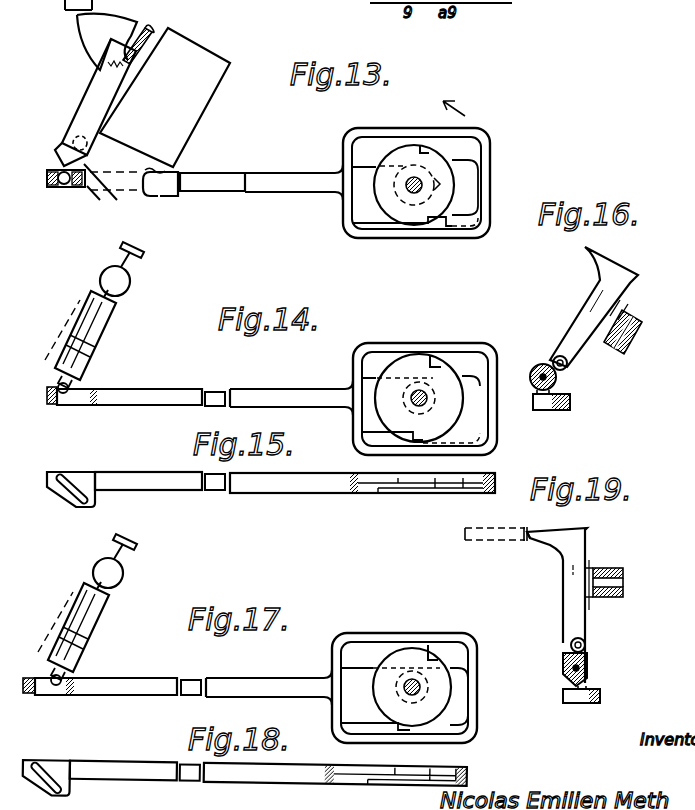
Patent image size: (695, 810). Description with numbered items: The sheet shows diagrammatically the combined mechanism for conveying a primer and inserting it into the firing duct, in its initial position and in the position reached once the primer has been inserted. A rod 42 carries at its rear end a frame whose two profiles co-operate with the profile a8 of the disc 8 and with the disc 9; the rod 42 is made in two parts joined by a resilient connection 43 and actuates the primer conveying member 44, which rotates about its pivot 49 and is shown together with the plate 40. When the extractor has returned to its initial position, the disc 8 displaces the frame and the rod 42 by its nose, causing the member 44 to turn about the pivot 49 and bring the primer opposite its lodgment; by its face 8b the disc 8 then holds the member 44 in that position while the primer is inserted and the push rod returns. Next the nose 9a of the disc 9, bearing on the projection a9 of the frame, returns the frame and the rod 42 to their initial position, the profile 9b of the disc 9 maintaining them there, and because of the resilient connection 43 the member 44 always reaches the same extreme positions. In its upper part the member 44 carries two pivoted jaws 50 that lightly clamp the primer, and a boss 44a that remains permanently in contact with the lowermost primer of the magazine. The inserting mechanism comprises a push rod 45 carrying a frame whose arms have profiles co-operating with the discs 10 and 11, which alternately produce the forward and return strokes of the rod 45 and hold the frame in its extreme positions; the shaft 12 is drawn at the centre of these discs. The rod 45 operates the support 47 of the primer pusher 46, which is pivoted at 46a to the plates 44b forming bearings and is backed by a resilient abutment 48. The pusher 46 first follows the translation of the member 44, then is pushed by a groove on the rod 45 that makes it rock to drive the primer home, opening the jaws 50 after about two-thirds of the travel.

In FIG. 13, the disc 8 is at (404, 188).
In FIG. 13, the face of disc 8 8b is at (445, 183).
In FIG. 13, the disc 9 is at (398, 212).
In FIG. 13, the nose of disc 9 9a is at (414, 227).
In FIG. 13, the profile of disc 9 9b is at (370, 194).
In FIG. 13, the profile of disc 8 a8 is at (393, 153).
In FIG. 13, the projection of the frame a9 is at (423, 226).
In FIG. 14, the disc 10 is at (432, 395).
In FIG. 17, the disc 10 is at (403, 687).
In FIG. 14, the disc 11 is at (442, 422).
In FIG. 17, the disc 11 is at (386, 708).
In FIG. 13, the shaft 12 is at (414, 180).
In FIG. 14, the shaft 12 is at (408, 403).
In FIG. 17, the shaft 12 is at (425, 683).
In FIG. 13, the plate 40 is at (212, 82).
In FIG. 13, the rod 42 is at (303, 180).
In FIG. 13, the resilient connection 43 is at (222, 180).
In FIG. 13, the primer conveying member 44 is at (84, 112).
In FIG. 13, the boss 44a is at (97, 38).
In FIG. 16, the plates 44b is at (548, 358).
In FIG. 19, the plates 44b is at (587, 611).
In FIG. 14, the push rod 45 is at (285, 397).
In FIG. 15, the push rod 45 is at (284, 488).
In FIG. 17, the push rod 45 is at (278, 687).
In FIG. 18, the push rod 45 is at (267, 773).
In FIG. 16, the primer pusher 46 is at (607, 268).
In FIG. 14, the primer pusher 46 is at (104, 312).
In FIG. 19, the primer pusher 46 is at (563, 543).
In FIG. 17, the primer pusher 46 is at (100, 603).
In FIG. 16, the pivot of the pusher 46a is at (557, 380).
In FIG. 19, the pivot of the pusher 46a is at (586, 652).
In FIG. 16, the pusher support 47 is at (538, 365).
In FIG. 15, the pusher support 47 is at (62, 478).
In FIG. 19, the pusher support 47 is at (588, 663).
In FIG. 18, the pusher support 47 is at (68, 788).
In FIG. 16, the resilient abutment 48 is at (604, 325).
In FIG. 19, the resilient abutment 48 is at (593, 578).
In FIG. 13, the pivot 49 is at (74, 143).
In FIG. 13, the pivoted jaws 50 is at (117, 43).